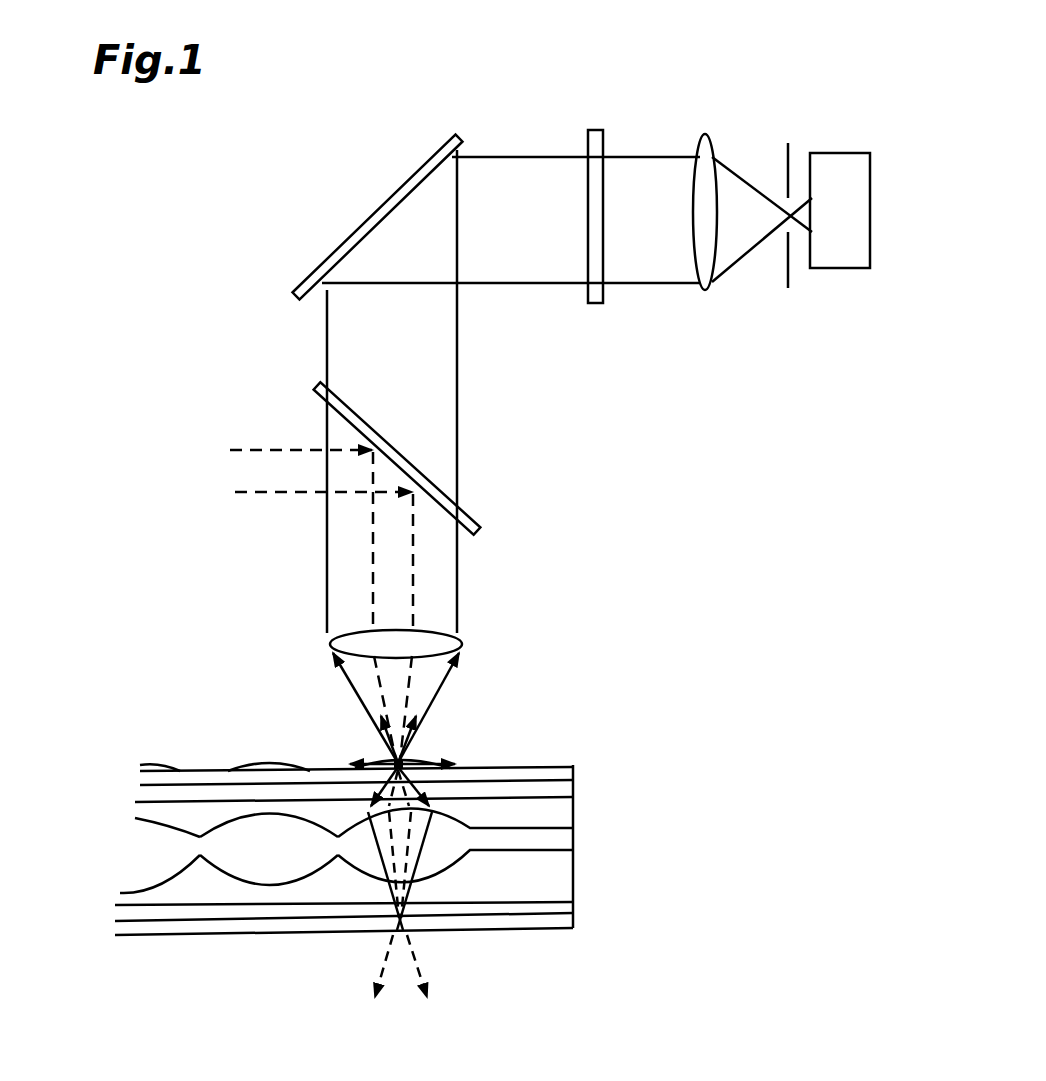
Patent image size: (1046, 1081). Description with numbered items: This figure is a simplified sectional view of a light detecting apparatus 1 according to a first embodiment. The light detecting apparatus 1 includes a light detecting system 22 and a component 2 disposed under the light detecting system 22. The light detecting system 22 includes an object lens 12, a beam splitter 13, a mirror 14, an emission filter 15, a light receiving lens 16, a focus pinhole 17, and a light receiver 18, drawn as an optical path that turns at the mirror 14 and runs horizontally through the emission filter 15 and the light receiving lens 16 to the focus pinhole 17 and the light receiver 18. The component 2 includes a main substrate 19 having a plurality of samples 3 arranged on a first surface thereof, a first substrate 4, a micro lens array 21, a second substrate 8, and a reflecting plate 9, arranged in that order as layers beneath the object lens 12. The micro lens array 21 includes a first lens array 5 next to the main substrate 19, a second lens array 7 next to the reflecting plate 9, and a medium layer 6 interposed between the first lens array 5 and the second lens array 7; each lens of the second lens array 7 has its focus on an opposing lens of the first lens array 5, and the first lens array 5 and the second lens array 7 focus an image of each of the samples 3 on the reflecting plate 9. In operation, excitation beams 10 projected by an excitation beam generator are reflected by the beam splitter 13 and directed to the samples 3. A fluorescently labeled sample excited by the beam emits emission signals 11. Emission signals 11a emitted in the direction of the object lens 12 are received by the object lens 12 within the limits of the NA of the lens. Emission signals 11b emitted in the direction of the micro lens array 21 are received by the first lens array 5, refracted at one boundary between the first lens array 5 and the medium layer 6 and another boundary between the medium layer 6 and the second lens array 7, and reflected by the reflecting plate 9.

The light detecting apparatus 1 is at (488, 1078).
The component 2 is at (97, 775).
The samples 3 is at (261, 760).
The first substrate 4 is at (573, 787).
The first lens array 5 is at (573, 815).
The medium layer 6 is at (573, 847).
The second lens array 7 is at (573, 880).
The second substrate 8 is at (573, 912).
The reflecting plate 9 is at (545, 925).
The excitation beams 10 is at (279, 605).
The emission signals 11 is at (467, 745).
The emission signals emitted toward object lens 11a is at (420, 746).
The emission signals emitted toward micro lens array 11b is at (440, 775).
The object lens 12 is at (371, 696).
The beam splitter 13 is at (429, 474).
The mirror 14 is at (378, 216).
The emission filter 15 is at (598, 246).
The light receiving lens 16 is at (752, 240).
The focus pinhole 17 is at (793, 239).
The light receiver 18 is at (865, 210).
The main substrate 19 is at (573, 768).
The micro lens array 21 is at (648, 805).
The light detecting system 22 is at (100, 130).